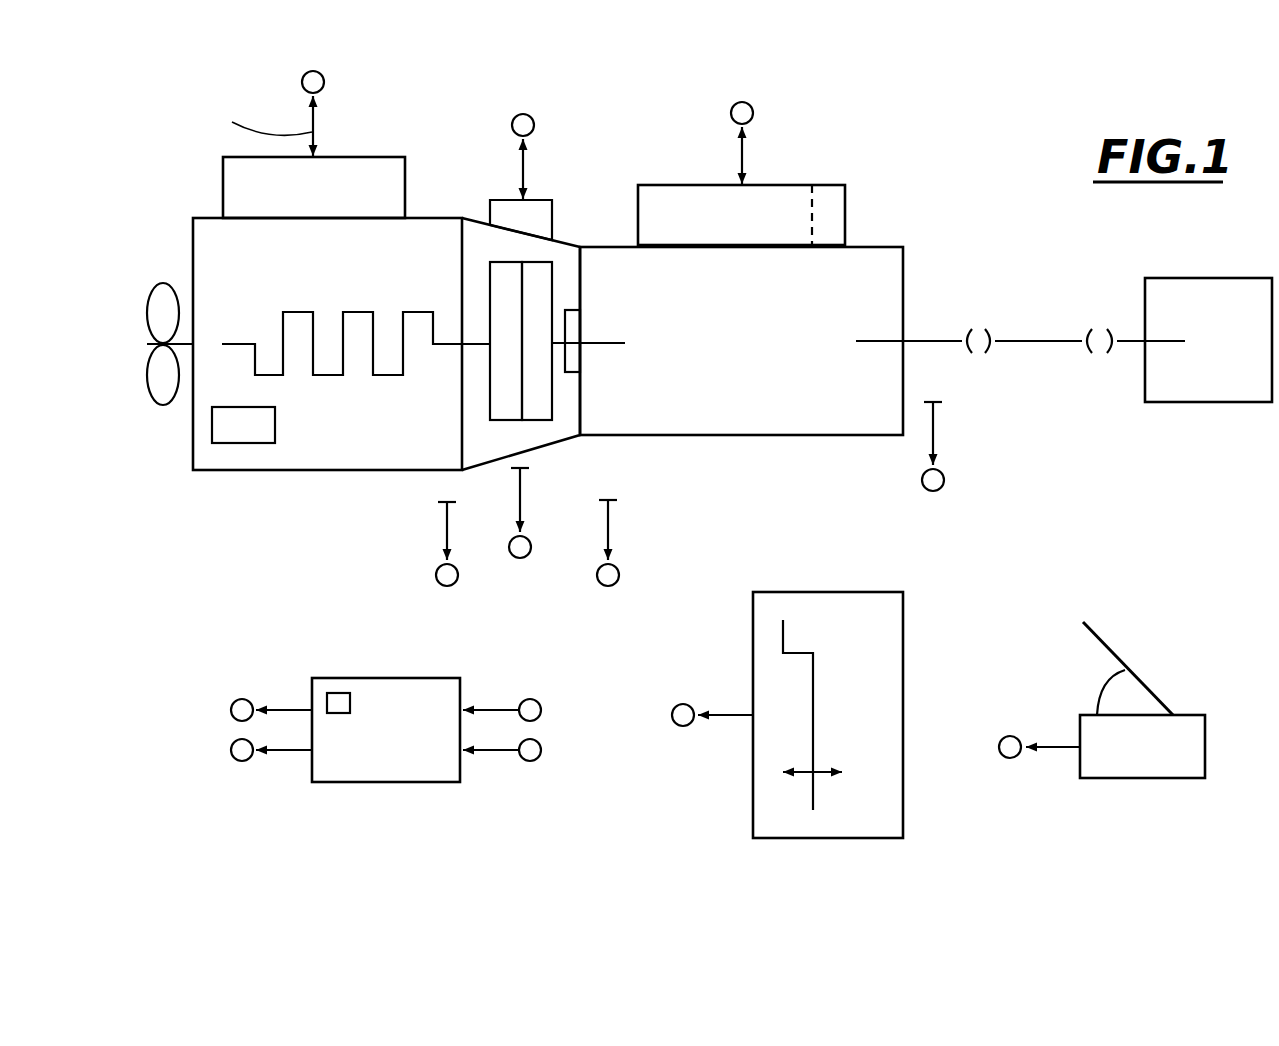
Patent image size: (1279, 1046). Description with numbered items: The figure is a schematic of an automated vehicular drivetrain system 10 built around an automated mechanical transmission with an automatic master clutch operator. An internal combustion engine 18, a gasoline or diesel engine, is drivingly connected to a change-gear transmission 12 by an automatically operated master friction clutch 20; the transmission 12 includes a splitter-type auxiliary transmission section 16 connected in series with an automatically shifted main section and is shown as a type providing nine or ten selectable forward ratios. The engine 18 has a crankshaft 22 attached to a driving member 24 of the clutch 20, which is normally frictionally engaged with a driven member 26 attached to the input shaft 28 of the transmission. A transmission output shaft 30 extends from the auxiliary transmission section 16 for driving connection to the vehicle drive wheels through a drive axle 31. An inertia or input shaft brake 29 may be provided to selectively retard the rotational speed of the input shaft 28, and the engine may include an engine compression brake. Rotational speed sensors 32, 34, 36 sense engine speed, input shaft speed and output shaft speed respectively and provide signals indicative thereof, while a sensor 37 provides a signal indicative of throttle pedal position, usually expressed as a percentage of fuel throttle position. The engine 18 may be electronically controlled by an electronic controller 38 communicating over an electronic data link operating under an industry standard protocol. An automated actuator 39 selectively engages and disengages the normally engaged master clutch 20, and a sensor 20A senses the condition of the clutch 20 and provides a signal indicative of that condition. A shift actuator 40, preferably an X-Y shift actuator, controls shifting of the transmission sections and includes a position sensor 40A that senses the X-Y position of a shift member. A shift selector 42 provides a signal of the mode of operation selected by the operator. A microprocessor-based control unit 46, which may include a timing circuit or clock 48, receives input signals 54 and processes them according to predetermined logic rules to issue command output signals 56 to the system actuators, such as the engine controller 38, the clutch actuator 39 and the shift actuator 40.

The automated vehicular drivetrain system 10 is at (892, 124).
The change-gear transmission 12 is at (815, 402).
The splitter-type auxiliary transmission section 16 is at (883, 283).
The internal combustion engine 18 is at (313, 435).
The master friction clutch 20 is at (572, 212).
The sensor 20A is at (652, 483).
The crankshaft 22 is at (445, 345).
The driving member 24 is at (505, 297).
The driven member 26 is at (535, 372).
The input shaft 28 is at (610, 345).
The input shaft brake 29 is at (574, 327).
The transmission output shaft 30 is at (932, 338).
The drive axle 31 is at (1192, 285).
The engine rotational speed sensor 32 is at (443, 518).
The input shaft rotational speed sensor 34 is at (615, 513).
The output shaft rotational speed sensor 36 is at (937, 433).
The throttle pedal position sensor 37 is at (1143, 747).
The electronic controller 38 is at (343, 187).
The automated actuator 39 is at (522, 217).
The shift actuator 40 is at (787, 208).
The position sensor 40A is at (833, 220).
The shift selector 42 is at (720, 622).
The microprocessor-based control unit 46 is at (386, 769).
The timing circuit or clock 48 is at (348, 712).
The input signals 54 is at (488, 786).
The command output signals 56 is at (282, 786).